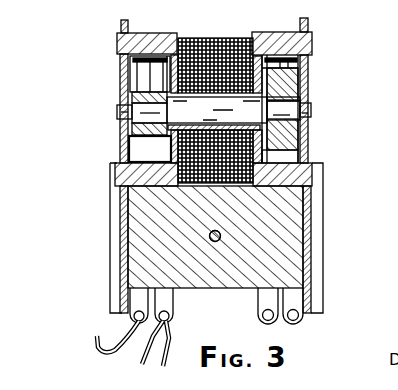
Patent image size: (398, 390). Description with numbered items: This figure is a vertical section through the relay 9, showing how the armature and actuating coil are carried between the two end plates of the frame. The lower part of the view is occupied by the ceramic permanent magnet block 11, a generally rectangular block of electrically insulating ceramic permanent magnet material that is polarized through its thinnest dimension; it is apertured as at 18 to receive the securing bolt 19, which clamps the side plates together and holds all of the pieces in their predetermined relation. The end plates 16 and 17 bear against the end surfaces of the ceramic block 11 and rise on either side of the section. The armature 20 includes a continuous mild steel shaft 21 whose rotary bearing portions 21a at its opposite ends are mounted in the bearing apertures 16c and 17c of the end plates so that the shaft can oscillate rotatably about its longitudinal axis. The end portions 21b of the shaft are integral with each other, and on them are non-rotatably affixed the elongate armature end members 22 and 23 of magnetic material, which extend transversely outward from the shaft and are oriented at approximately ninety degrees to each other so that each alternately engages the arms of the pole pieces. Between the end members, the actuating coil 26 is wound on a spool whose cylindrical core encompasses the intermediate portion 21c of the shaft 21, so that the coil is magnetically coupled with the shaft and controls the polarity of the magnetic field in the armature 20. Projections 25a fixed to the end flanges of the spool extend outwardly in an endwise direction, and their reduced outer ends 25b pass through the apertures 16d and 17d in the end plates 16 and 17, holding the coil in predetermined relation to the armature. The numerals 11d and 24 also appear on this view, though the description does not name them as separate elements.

The relay 9 is at (96, 208).
The ceramic permanent magnet block 11 is at (213, 292).
The base cover frame 11d is at (287, 232).
The end plate 16 is at (120, 266).
The bearing aperture 16c is at (118, 122).
The aperture 16d is at (119, 26).
The end plate 17 is at (302, 273).
The bearing aperture 17c is at (313, 123).
The aperture 17d is at (317, 188).
The aperture 18 is at (221, 233).
The securing bolt 19 is at (211, 240).
The armature 20 is at (315, 90).
The shaft 21 is at (117, 111).
The rotary bearing portion 21a is at (312, 110).
The end portion of shaft 21b is at (216, 110).
The intermediate portion of shaft 21c is at (217, 110).
The armature end member 22 is at (128, 90).
The armature end member 23 is at (309, 68).
The post 24 is at (270, 31).
The projection 25a is at (150, 33).
The reduced outer end 25b is at (125, 174).
The actuating coil 26 is at (213, 37).